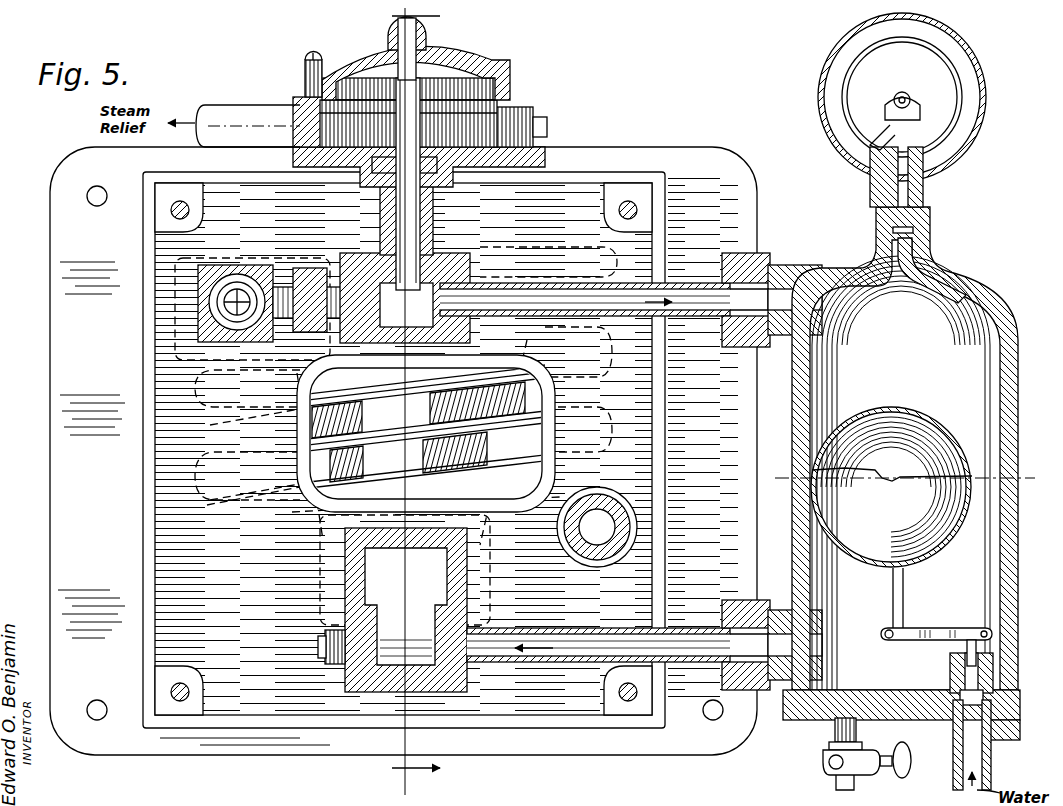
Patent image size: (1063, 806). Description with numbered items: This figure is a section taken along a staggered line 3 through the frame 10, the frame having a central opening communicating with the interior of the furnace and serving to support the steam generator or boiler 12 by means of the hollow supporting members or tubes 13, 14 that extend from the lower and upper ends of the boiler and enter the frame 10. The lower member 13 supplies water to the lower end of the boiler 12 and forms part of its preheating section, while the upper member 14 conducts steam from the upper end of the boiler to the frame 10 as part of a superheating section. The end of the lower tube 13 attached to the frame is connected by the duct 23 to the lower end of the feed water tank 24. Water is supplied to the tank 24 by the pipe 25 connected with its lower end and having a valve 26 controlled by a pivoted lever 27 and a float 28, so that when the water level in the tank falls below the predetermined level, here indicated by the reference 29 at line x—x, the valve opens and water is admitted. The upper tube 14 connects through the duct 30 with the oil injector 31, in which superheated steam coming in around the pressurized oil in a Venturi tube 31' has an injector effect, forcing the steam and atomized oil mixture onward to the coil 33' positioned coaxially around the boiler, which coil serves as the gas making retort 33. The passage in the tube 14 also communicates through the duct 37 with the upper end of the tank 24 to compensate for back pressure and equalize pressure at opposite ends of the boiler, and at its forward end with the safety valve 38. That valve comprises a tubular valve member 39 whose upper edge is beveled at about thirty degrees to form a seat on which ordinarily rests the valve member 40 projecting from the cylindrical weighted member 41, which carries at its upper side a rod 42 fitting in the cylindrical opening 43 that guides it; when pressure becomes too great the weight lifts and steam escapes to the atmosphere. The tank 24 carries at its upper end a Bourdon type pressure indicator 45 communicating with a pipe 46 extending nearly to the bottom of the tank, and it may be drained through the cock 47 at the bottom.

The section line 3- 3 is at (405, 403).
The frame 10 is at (83, 490).
The boiler 12 is at (426, 433).
The lower hollow supporting member 13 is at (463, 575).
The upper hollow supporting member 14 is at (468, 276).
The duct 23 is at (537, 663).
The feed water tank 24 is at (1020, 428).
The pipe 25 is at (990, 760).
The valve 26 is at (953, 677).
The pivoted lever 27 is at (940, 638).
The float 28 is at (911, 396).
The water level 29 is at (858, 480).
The duct 30 is at (282, 330).
The oil injector 31 is at (237, 332).
The Venturi tube 31' is at (189, 303).
The gas making retort 33 is at (396, 436).
The coil 33' is at (422, 427).
The duct 37 is at (633, 280).
The safety valve 38 is at (383, 153).
The valve member 39 is at (436, 198).
The valve member 40 is at (398, 163).
The cylindrical weighted member 41 is at (408, 112).
The rod 42 is at (397, 90).
The cylindrical opening 43 is at (414, 52).
The pressure indicator 45 is at (826, 58).
The pipe 46 is at (962, 297).
The cock 47 is at (827, 763).